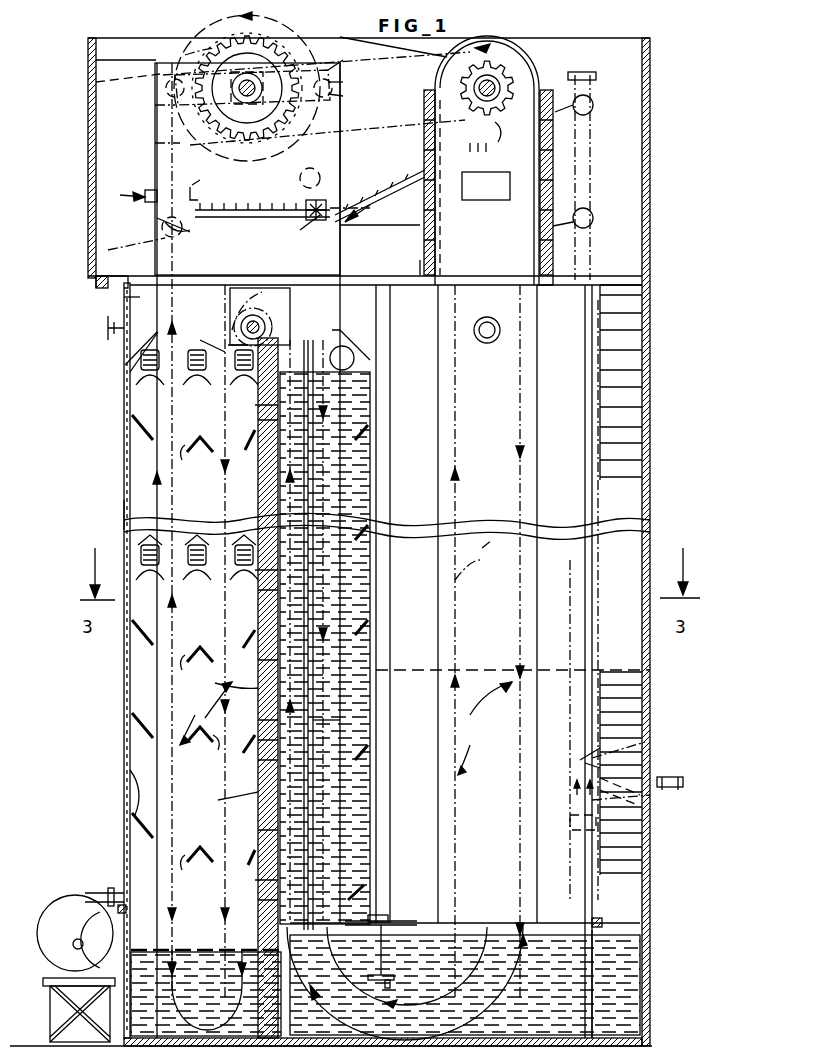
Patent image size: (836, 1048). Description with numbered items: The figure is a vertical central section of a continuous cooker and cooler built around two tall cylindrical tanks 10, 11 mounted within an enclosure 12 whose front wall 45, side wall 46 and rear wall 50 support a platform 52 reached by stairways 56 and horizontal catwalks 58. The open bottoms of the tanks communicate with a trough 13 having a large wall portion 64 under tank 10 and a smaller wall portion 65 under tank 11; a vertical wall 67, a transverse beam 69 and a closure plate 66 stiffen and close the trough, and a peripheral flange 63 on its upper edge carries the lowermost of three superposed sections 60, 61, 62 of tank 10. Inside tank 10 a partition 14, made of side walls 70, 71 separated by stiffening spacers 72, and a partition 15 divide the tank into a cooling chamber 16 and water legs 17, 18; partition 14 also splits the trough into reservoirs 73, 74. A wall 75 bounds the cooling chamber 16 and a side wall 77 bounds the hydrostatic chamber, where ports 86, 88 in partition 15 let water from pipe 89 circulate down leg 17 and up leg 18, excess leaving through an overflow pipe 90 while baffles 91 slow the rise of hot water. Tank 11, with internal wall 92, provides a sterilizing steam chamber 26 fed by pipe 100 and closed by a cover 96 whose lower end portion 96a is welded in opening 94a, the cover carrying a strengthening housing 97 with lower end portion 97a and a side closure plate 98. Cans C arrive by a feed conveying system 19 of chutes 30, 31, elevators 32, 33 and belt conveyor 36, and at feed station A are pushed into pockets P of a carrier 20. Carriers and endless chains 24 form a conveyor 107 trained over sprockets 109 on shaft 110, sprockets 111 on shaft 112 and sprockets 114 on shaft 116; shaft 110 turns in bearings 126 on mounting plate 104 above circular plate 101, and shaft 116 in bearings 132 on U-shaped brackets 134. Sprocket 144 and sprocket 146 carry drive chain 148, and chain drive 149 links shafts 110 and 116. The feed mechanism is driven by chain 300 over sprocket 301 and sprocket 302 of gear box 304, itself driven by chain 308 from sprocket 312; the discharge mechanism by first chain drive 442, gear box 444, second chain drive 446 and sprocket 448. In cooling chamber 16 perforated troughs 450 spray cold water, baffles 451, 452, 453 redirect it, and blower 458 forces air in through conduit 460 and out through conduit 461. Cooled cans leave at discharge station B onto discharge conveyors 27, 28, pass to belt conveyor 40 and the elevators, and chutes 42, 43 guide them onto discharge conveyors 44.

The cylindrical tank 10 is at (122, 488).
The cylindrical tank 11 is at (600, 420).
The enclosure 12 is at (650, 195).
The trough 13 is at (600, 1003).
The partition 14 is at (226, 680).
The partition 15 is at (340, 717).
The cooling chamber 16 is at (195, 507).
The water leg 17 is at (226, 798).
The water leg 18 is at (355, 478).
The feed conveying system 19 is at (640, 800).
The carrier 20 is at (345, 232).
The endless chain 24 is at (345, 257).
The steam chamber 26 is at (469, 600).
The discharge conveyor 27 is at (200, 190).
The discharge conveyor 28 is at (150, 190).
The chute 30 is at (660, 811).
The chute 31 is at (580, 798).
The elevator 32 is at (570, 600).
The elevator 33 is at (600, 548).
The endless belt conveyor 36 is at (385, 195).
The endless belt conveyor 40 is at (420, 270).
The chute 42 is at (670, 746).
The chute 43 is at (600, 775).
The discharge conveyor 44 is at (683, 784).
The front wall 45 is at (648, 296).
The side wall 46 is at (88, 52).
The rear wall 50 is at (96, 70).
The platform 52 is at (96, 280).
The stairway 56 is at (630, 320).
The horizontal catwalk 58 is at (505, 668).
The cylindrical section 60 is at (124, 785).
The cylindrical section 61 is at (124, 504).
The cylindrical section 62 is at (128, 352).
The peripheral flange 63 is at (120, 929).
The partially cylindrical wall portion 64 is at (100, 968).
The partially cylindrical wall portion 65 is at (594, 955).
The plate 66 is at (450, 920).
The vertical partition wall 67 is at (385, 979).
The transverse beam 69 is at (385, 938).
The side wall 70 is at (258, 455).
The side wall 71 is at (262, 722).
The stiffening spacer 72 is at (270, 494).
The reservoir 73 is at (143, 925).
The reservoir 74 is at (338, 925).
The wall 75 is at (201, 616).
The side wall 77 is at (350, 398).
The fluid flow port 86 is at (312, 378).
The fluid flow port 88 is at (306, 905).
The pipe 89 is at (340, 332).
The overflow pipe 90 is at (354, 356).
The baffle 91 is at (370, 440).
The internal wall 92 is at (456, 642).
The rectangular opening 94a is at (540, 285).
The cover 96 is at (505, 55).
The lower end portion 96a is at (535, 260).
The strengthening housing 97 is at (560, 228).
The lower end portion 97a is at (442, 265).
The side closure plate 98 is at (486, 196).
The pipe 100 is at (482, 342).
The circular plate 101 is at (130, 295).
The mounting plate 104 is at (155, 128).
The conveyor 107 is at (318, 222).
The sprocket 109 is at (235, 192).
The shaft 110 is at (250, 86).
The sprocket 111 is at (484, 139).
The shaft 112 is at (495, 84).
The sprocket 114 is at (225, 352).
The shaft 116 is at (245, 322).
The bearing 126 is at (270, 120).
The bearing 132 is at (268, 320).
The U-shaped bracket 134 is at (232, 298).
The sprocket 144 is at (295, 30).
The sprocket 146 is at (455, 70).
The drive chain 148 is at (340, 120).
The chain drive 149 is at (136, 246).
The chain 300 is at (345, 98).
The sprocket 301 is at (300, 182).
The sprocket 302 is at (345, 70).
The speed increasing gear box 304 is at (345, 84).
The chain 308 is at (270, 60).
The sprocket 312 is at (238, 108).
The first chain drive 442 is at (218, 60).
The speed increasing gear box 444 is at (96, 84).
The second chain drive 446 is at (155, 112).
The sprocket 448 is at (155, 143).
The perforated trough 450 is at (240, 372).
The baffle 451 is at (132, 416).
The baffle 452 is at (192, 458).
The baffle 453 is at (254, 428).
The blower 458 is at (70, 900).
The conduit 460 is at (118, 890).
The conduit 461 is at (108, 338).
The feed station A is at (363, 204).
The discharge station B is at (121, 187).
The can C is at (260, 218).
The pocket P is at (305, 212).